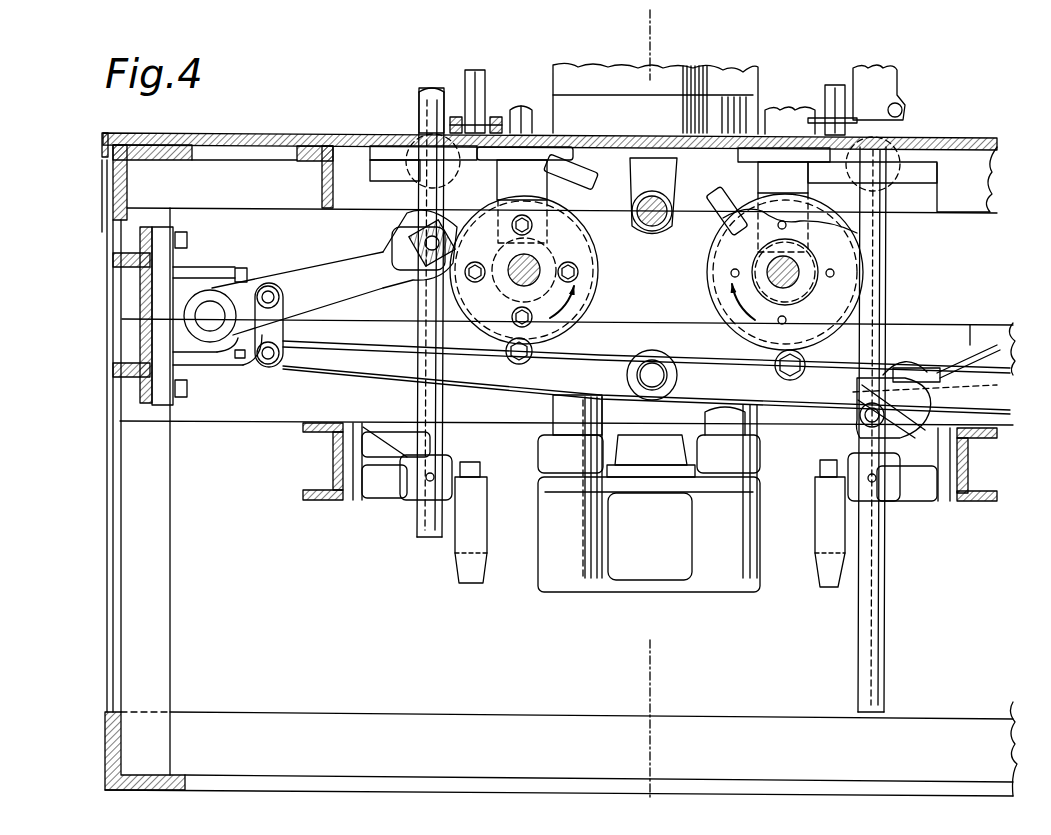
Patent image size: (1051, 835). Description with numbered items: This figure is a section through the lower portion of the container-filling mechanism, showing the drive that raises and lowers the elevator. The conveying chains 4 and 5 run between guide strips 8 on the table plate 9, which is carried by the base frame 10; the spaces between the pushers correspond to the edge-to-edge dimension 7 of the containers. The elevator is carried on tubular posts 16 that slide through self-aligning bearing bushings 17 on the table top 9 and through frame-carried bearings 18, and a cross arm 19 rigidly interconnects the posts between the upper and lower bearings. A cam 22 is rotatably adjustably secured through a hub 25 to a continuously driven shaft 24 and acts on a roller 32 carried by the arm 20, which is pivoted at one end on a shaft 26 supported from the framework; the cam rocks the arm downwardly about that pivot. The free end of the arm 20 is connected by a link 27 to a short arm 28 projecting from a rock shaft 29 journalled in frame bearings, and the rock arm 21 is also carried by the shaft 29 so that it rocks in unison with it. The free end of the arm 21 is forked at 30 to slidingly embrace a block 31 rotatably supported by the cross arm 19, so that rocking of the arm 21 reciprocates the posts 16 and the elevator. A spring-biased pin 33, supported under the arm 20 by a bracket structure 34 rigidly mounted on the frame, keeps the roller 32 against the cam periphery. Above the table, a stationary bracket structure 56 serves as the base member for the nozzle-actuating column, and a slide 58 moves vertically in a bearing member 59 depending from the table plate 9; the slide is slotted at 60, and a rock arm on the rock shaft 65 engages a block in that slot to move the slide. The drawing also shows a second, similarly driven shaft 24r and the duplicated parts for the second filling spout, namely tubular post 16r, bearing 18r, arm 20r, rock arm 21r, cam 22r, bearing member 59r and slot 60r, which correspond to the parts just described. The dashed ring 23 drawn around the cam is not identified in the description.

The conveying chain 4 is at (483, 118).
The conveying chain 5 is at (65, 178).
The edge-to-edge dimension 7 is at (697, 23).
The guide strips 8 is at (458, 112).
The table plate 9 is at (962, 138).
The base frame 10 is at (973, 192).
The tubular posts 16 is at (428, 410).
The tubular post 16r is at (880, 618).
The self-aligning bearing bushings 17 is at (400, 175).
The frame-carried bearings 18 is at (410, 492).
The frame-carried bearing 18r is at (880, 493).
The cross arm 19 is at (427, 290).
The arm 20 is at (487, 375).
The arm 20r is at (793, 402).
The rock arm 21 is at (296, 283).
The rock arm 21r is at (975, 350).
The cam 22 is at (598, 270).
The cam 22r is at (865, 284).
The cam ring 23 is at (606, 290).
The shaft 24 is at (510, 265).
The shaft 24r is at (797, 265).
The hub 25 is at (521, 271).
The shaft 26 is at (656, 370).
The link 27 is at (286, 332).
The short arm 28 is at (250, 292).
The rock shaft 29 is at (207, 308).
The fork 30 is at (372, 248).
The block 31 is at (395, 280).
The roller 32 is at (533, 346).
The spring-biased pin 33 is at (560, 413).
The bracket structure 34 is at (548, 560).
The bracket structure 56 is at (757, 78).
The slide 58 is at (522, 110).
The bearing member 59 is at (525, 195).
The bearing member 59r is at (837, 194).
The slot 60 is at (608, 215).
The slot 60r is at (708, 220).
The rock shaft 65 is at (650, 226).